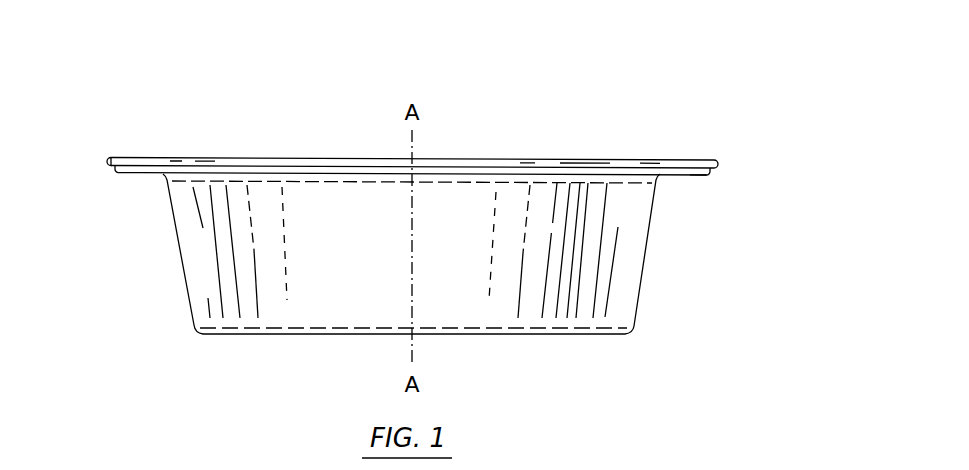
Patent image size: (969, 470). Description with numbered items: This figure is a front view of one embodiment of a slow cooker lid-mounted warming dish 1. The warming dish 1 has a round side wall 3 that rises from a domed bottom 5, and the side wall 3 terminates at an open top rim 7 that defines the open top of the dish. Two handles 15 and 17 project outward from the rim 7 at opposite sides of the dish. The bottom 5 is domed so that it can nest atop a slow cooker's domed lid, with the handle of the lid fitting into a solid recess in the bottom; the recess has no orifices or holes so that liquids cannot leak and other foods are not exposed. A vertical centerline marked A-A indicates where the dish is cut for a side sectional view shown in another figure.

The slow cooker lid-mounted warming dish 1 is at (613, 91).
The round side wall 3 is at (624, 213).
The domed bottom 5 is at (545, 336).
The open top rim 7 is at (493, 160).
The handle 15 is at (130, 158).
The handle 17 is at (698, 160).